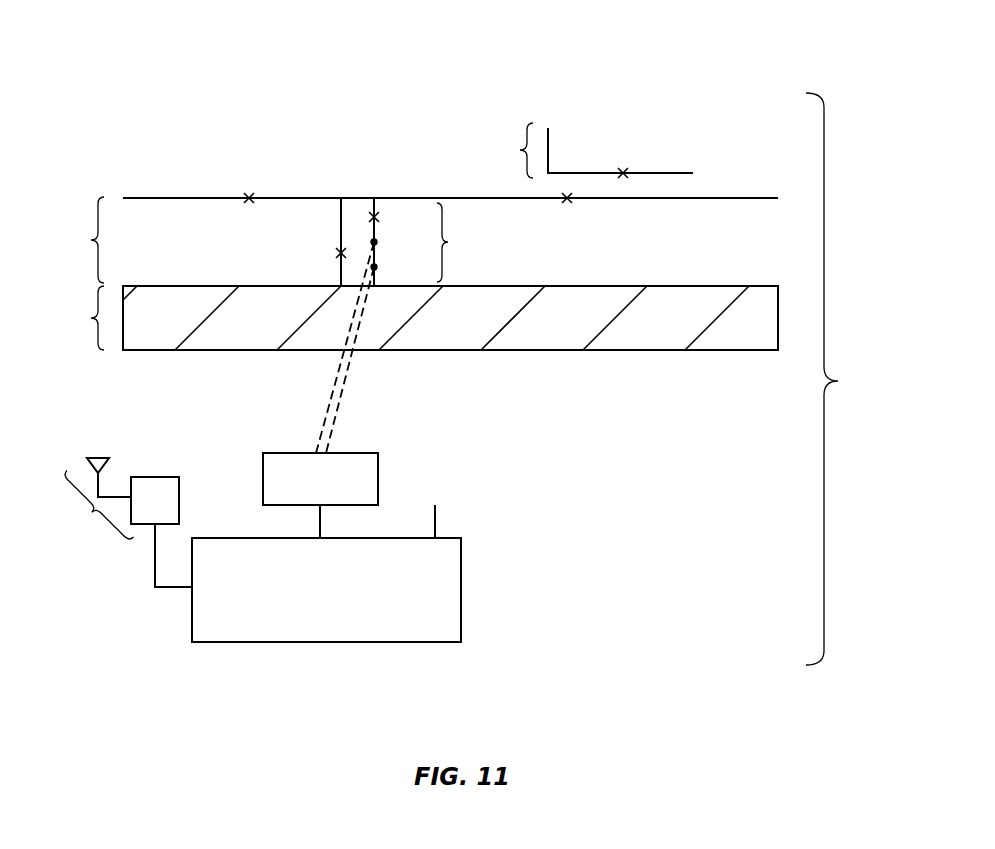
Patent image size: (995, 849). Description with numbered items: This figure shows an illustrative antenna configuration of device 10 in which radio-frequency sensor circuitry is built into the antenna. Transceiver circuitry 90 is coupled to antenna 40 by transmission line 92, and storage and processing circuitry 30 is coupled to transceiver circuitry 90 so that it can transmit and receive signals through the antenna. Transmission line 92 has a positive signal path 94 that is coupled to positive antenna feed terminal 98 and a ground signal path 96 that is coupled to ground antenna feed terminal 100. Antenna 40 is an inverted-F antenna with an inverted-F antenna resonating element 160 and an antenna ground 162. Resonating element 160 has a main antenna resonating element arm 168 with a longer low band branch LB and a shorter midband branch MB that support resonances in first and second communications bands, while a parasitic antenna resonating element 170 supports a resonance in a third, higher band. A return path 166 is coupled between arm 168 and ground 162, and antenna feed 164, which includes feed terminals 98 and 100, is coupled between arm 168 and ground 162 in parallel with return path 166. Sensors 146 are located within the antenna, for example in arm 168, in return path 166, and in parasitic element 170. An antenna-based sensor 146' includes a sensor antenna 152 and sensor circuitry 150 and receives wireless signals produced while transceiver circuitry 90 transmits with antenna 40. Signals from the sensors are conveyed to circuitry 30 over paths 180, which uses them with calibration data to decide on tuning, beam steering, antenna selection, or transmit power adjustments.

The device 10 is at (834, 379).
The antenna 40 is at (106, 66).
The inverted-F antenna resonating element 160 is at (419, 240).
The antenna ground 162 is at (419, 318).
The return path 166 is at (340, 214).
The main antenna resonating element arm 168 is at (376, 197).
The antenna feed 164 is at (459, 242).
The positive antenna feed terminal 98 is at (378, 243).
The ground antenna feed terminal 100 is at (378, 268).
The parasitic antenna resonating element 170 is at (591, 150).
The sensors 146 is at (447, 198).
The antenna-based sensor 146' is at (96, 508).
The transmission line 92 is at (338, 347).
The positive signal path 94 is at (331, 399).
The ground signal path 96 is at (347, 366).
The transceiver circuitry 90 is at (379, 475).
The storage and processing circuitry 30 is at (418, 642).
The paths 180 is at (437, 519).
The sensor circuitry 150 is at (162, 477).
The sensor antenna 152 is at (100, 457).